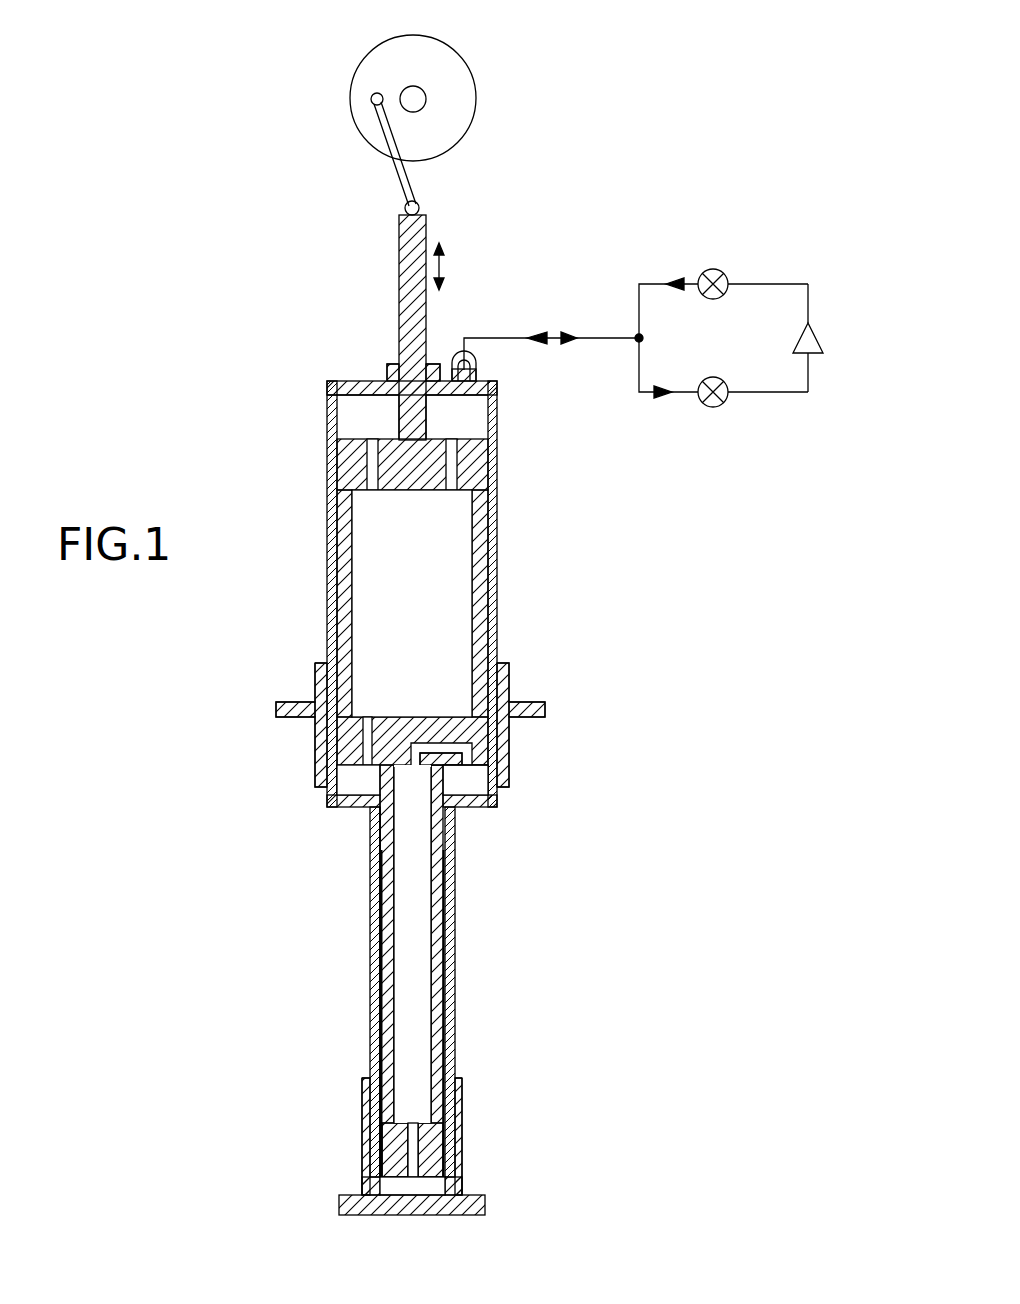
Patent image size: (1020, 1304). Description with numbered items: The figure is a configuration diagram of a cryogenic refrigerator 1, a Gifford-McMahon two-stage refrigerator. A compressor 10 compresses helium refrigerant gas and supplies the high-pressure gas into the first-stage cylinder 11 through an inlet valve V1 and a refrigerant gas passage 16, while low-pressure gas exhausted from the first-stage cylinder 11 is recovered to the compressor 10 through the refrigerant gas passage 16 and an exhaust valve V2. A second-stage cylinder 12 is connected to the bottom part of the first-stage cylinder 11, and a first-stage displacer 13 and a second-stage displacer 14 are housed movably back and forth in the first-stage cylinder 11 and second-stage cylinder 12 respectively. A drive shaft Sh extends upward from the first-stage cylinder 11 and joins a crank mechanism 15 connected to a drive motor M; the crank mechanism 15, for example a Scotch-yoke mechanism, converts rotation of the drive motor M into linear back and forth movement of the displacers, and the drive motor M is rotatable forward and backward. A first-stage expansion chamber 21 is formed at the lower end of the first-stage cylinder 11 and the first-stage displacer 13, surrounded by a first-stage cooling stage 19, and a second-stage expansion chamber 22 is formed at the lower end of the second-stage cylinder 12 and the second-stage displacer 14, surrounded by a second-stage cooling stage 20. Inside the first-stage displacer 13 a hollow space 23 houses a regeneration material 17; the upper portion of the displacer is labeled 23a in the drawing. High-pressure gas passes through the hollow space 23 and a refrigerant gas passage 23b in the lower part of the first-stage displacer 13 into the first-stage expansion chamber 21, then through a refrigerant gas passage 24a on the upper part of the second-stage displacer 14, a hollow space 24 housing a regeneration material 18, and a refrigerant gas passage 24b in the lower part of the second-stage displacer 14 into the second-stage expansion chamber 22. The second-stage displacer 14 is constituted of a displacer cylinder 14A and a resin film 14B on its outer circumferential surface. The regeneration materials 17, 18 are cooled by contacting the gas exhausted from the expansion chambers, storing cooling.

The cryogenic refrigerator 1 is at (576, 12).
The drive motor M is at (478, 85).
The crank mechanism 15 is at (390, 136).
The drive shaft Sh is at (400, 287).
The refrigerant gas passage 16 is at (547, 336).
The inlet valve V1 is at (708, 269).
The exhaust valve V2 is at (708, 407).
The compressor 10 is at (817, 344).
The first-stage cylinder 11 is at (327, 512).
The piston upper portion 23a is at (378, 438).
The hollow space 23 is at (377, 630).
The regeneration material 17 is at (450, 540).
The refrigerant gas passage 23b is at (367, 724).
The refrigerant gas passage 24a is at (426, 748).
The first-stage displacer 13 is at (358, 771).
The first-stage expansion chamber 21 is at (468, 780).
The first-stage cooling stage 19 is at (509, 668).
The second-stage cylinder 12 is at (414, 992).
The displacer cylinder 14A is at (454, 878).
The hollow space 24 is at (410, 904).
The regeneration material 18 is at (415, 974).
The refrigerant gas passage 24b is at (410, 1132).
The second-stage cooling stage 20 is at (462, 1092).
The resin film 14B is at (446, 1146).
The second-stage displacer 14 is at (392, 1189).
The second-stage expansion chamber 22 is at (430, 1192).